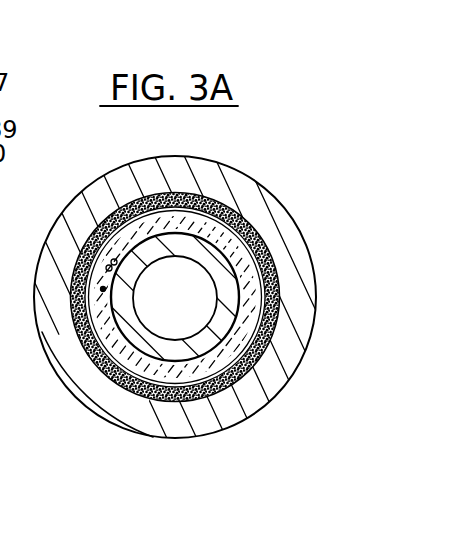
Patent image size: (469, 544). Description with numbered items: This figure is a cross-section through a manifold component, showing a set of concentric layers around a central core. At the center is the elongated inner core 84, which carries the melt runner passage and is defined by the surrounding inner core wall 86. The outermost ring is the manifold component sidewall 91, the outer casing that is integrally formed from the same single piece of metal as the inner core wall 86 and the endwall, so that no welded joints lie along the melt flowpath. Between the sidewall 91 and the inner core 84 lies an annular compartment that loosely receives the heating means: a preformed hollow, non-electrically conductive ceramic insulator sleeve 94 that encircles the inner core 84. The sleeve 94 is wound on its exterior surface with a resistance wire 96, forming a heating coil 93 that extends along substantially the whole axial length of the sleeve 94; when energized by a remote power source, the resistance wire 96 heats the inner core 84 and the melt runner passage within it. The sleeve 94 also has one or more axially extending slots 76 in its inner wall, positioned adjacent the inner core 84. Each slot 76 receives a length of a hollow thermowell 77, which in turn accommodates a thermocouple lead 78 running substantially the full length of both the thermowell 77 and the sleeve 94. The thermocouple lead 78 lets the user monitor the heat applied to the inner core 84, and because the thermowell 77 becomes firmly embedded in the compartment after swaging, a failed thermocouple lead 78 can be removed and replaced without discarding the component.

The axially extending slot 76 is at (76, 308).
The hollow thermowell 77 is at (79, 321).
The thermocouple lead 78 is at (66, 260).
The elongated inner core 84 is at (195, 313).
The inner core wall 86 is at (221, 207).
The manifold component sidewall 91 is at (60, 278).
The heating coil 93 is at (236, 247).
The ceramic insulator sleeve 94 is at (182, 208).
The resistance wire 96 is at (143, 199).